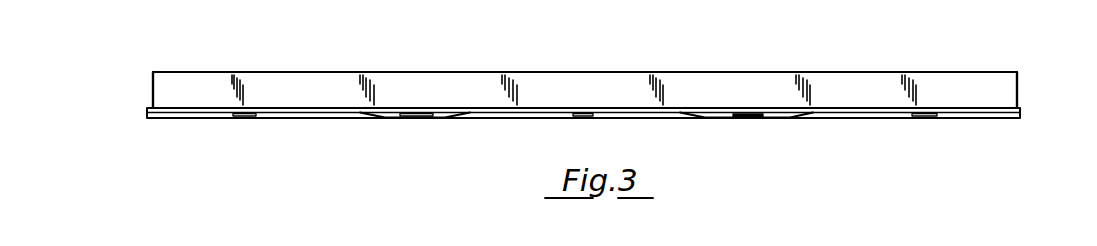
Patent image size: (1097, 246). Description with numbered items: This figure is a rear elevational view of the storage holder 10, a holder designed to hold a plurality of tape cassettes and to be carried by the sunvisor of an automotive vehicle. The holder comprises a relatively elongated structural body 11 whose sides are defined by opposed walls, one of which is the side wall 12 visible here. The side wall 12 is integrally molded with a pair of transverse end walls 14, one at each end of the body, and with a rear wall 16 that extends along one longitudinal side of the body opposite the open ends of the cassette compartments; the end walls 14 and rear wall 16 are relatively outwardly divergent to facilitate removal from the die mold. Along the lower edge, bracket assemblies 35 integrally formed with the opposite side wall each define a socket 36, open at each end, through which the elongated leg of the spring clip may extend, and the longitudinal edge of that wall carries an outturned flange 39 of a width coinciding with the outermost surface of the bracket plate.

The storage holder 10 is at (468, 66).
The structural body 11 is at (671, 67).
The side wall 12 is at (233, 72).
The end walls 14 is at (152, 80).
The rear wall 16 is at (863, 87).
The bracket assemblies 35 is at (438, 121).
The socket 36 is at (757, 122).
The outturned flange 39 is at (357, 118).